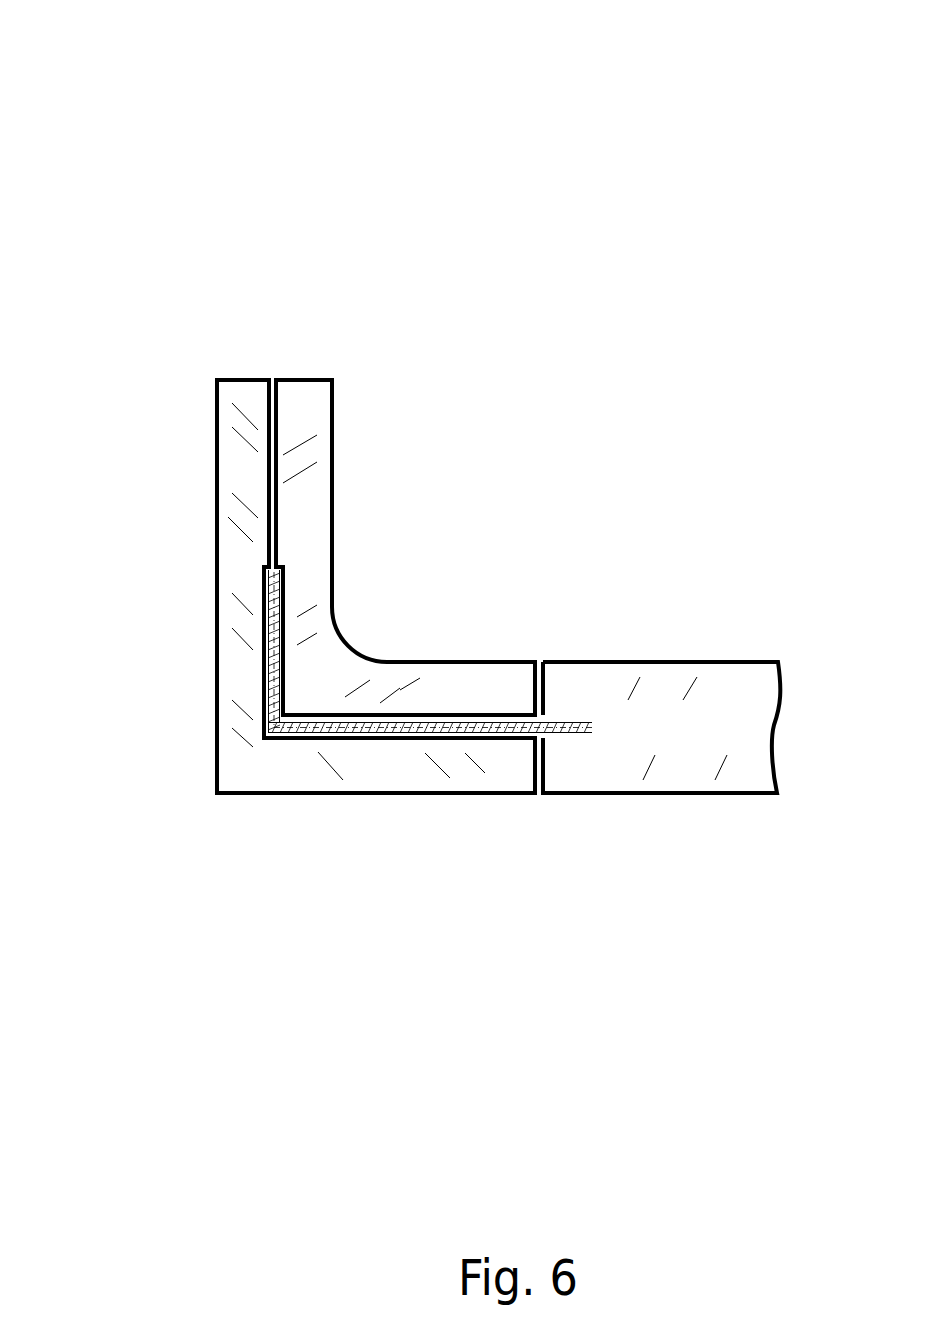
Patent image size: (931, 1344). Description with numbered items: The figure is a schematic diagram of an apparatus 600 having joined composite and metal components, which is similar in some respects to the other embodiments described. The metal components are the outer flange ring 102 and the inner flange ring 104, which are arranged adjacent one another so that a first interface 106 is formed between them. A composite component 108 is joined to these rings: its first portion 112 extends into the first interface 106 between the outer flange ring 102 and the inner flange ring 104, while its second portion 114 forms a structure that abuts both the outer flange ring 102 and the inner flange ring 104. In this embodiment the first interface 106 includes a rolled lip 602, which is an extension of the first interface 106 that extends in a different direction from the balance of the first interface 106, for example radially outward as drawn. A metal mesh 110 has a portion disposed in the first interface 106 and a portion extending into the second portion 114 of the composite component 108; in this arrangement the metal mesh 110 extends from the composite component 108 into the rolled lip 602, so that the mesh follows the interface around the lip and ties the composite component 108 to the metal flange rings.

The apparatus 600 is at (127, 70).
The outer flange ring 102 is at (317, 557).
The inner flange ring 104 is at (237, 560).
The first interface 106 is at (253, 727).
The composite component 108 is at (745, 685).
The metal mesh 110 is at (498, 730).
The first portion 112 is at (445, 722).
The second portion 114 is at (600, 672).
The rolled lip 602 is at (268, 603).